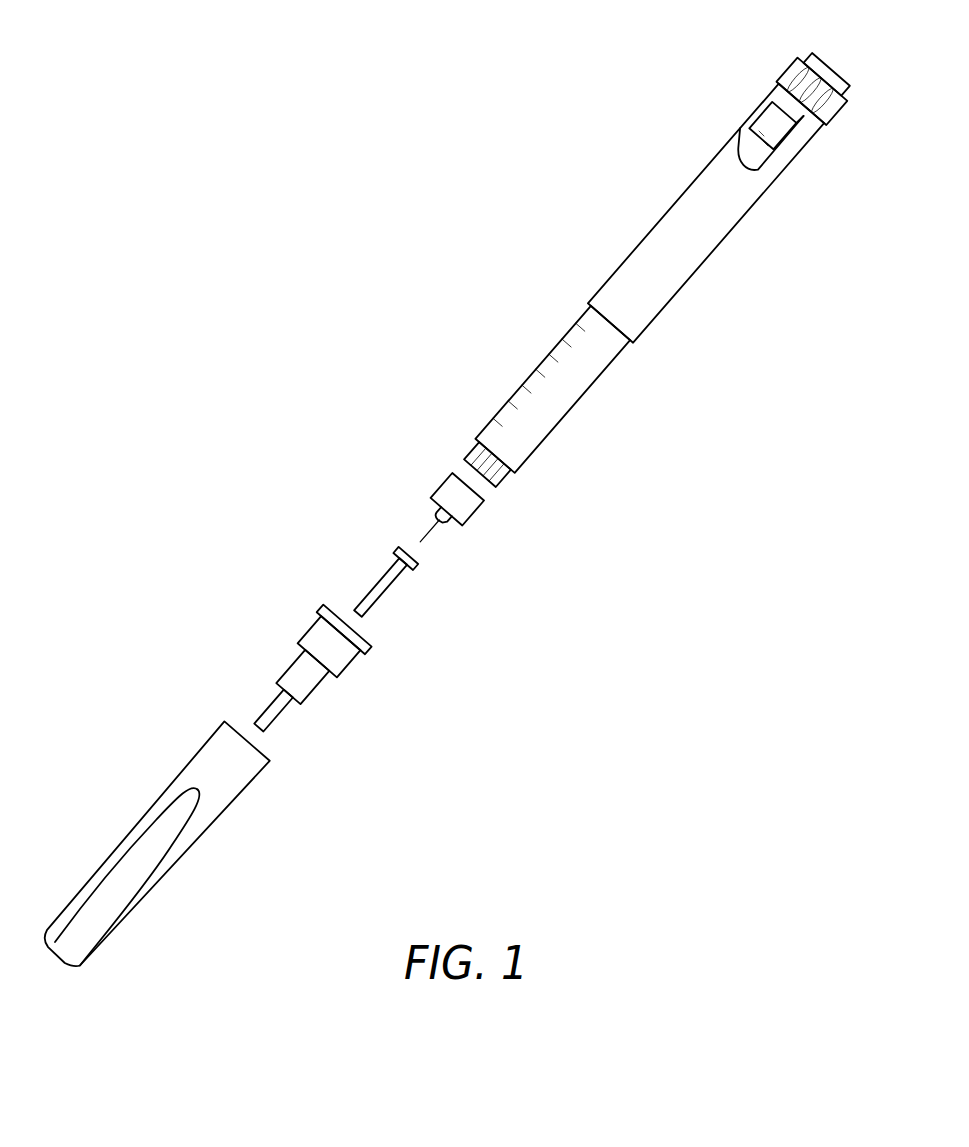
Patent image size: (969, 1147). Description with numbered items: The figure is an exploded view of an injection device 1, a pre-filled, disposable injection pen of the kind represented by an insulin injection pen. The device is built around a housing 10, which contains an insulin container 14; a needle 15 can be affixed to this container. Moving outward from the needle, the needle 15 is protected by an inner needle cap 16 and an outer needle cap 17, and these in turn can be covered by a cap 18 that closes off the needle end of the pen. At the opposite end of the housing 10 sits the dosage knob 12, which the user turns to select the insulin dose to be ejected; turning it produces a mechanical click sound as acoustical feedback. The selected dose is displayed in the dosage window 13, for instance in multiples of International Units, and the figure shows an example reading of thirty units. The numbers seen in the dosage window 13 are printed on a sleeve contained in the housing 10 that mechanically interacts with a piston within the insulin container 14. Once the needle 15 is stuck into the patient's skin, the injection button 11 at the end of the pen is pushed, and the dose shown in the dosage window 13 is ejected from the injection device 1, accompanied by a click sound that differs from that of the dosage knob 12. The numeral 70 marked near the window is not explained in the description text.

The injection device 1 is at (516, 262).
The housing 10 is at (670, 218).
The injection button 11 is at (841, 56).
The dosage knob 12 is at (774, 69).
The dosage window 13 is at (741, 128).
The display scale / dose indicator 70 is at (801, 112).
The insulin container 14 is at (541, 373).
The needle 15 is at (448, 491).
The inner needle cap 16 is at (378, 585).
The outer needle cap 17 is at (314, 635).
The cap 18 is at (204, 753).